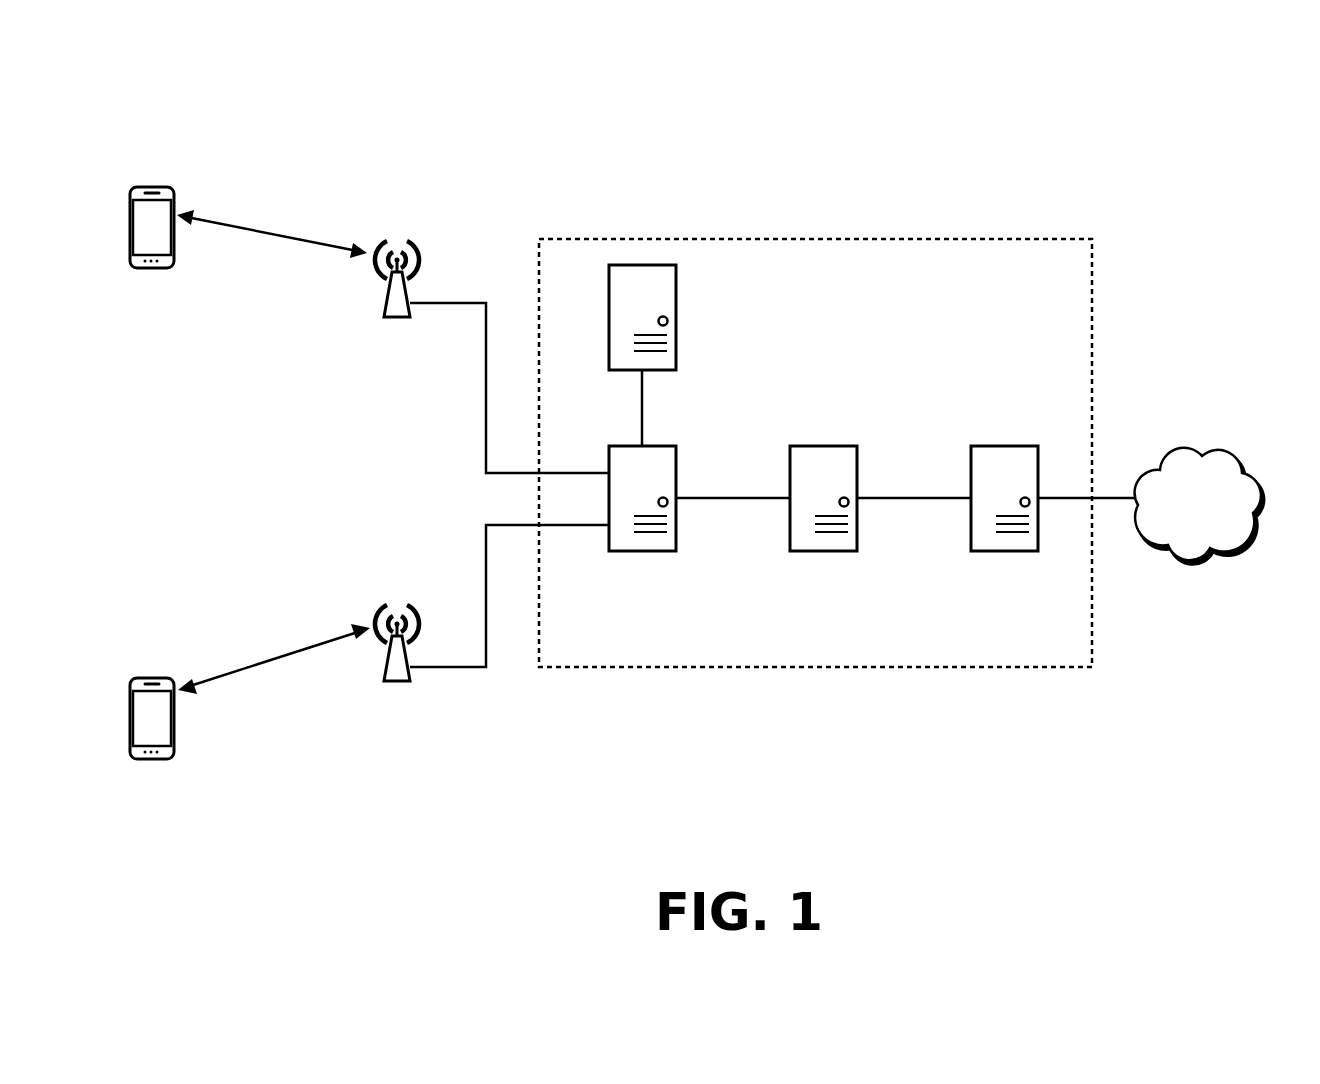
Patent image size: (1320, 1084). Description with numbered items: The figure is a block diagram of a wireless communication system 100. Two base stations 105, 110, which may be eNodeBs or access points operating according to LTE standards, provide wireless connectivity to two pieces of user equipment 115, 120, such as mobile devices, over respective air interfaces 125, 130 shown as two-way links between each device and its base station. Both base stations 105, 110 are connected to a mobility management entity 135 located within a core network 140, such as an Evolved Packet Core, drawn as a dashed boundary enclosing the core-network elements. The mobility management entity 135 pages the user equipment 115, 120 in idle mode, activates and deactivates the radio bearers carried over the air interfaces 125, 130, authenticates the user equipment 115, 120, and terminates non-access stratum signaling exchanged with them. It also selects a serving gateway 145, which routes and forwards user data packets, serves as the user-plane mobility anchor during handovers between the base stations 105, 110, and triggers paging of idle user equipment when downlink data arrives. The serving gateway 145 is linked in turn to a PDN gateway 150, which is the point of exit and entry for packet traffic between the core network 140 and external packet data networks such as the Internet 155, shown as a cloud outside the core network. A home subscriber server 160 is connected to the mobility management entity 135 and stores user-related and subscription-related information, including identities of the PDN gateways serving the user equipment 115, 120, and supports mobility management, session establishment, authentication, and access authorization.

The wireless communication system 100 is at (1220, 133).
The base station 105 is at (396, 320).
The base station 110 is at (397, 685).
The user equipment 115 is at (129, 214).
The user equipment 120 is at (129, 690).
The air interface 125 is at (285, 238).
The air interface 130 is at (292, 652).
The mobility management entity 135 is at (643, 553).
The core network 140 is at (797, 239).
The serving gateway 145 is at (825, 553).
The PDN gateway 150 is at (1005, 552).
The Internet 155 is at (1197, 558).
The home subscriber server 160 is at (676, 317).